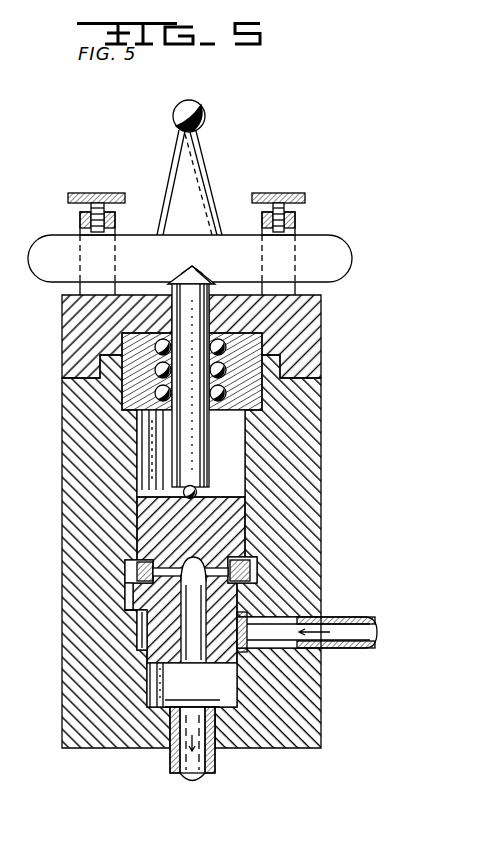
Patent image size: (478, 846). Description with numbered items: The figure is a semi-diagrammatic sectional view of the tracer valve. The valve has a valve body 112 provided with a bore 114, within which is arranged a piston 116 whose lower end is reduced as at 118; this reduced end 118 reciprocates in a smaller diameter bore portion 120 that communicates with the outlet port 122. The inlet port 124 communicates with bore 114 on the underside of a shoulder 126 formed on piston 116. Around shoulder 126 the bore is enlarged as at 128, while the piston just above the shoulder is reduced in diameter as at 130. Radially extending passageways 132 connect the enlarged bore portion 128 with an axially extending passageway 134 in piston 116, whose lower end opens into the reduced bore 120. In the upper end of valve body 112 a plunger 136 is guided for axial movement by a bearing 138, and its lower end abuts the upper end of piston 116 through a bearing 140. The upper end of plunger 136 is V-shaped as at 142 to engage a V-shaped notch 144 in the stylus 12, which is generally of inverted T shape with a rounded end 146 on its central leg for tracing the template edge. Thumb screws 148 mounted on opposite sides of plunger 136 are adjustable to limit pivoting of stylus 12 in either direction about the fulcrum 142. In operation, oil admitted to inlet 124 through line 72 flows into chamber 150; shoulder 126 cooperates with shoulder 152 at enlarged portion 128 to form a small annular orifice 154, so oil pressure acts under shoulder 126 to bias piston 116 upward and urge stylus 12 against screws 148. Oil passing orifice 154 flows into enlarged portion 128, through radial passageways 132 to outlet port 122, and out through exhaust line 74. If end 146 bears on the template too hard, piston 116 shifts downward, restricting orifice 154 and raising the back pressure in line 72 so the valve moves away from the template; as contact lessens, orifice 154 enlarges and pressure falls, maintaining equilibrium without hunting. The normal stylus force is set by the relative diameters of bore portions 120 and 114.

The stylus 12 is at (198, 178).
The line 72 is at (366, 633).
The exhaust line 74 is at (196, 782).
The valve body 112 is at (300, 481).
The bore 114 is at (245, 438).
The piston 116 is at (238, 519).
The reduced end 118 is at (147, 655).
The smaller diameter bore portion 120 is at (236, 670).
The outlet port 122 is at (168, 740).
The inlet port 124 is at (310, 649).
The shoulder 126 is at (258, 598).
The enlarged bore portion 128 is at (246, 607).
The reduced diameter portion 130 is at (252, 568).
The radially extending passageways 132 is at (127, 563).
The axially extending passageway 134 is at (181, 684).
The plunger 136 is at (193, 447).
The bearing 138 is at (218, 352).
The bearing 140 is at (200, 490).
The V-shaped upper end 142 is at (190, 270).
The V-shaped notch 144 is at (202, 276).
The rounded end 146 is at (203, 105).
The thumb screws 148 is at (109, 191).
The chamber 150 is at (141, 626).
The shoulder 152 is at (128, 596).
The annular orifice 154 is at (221, 606).